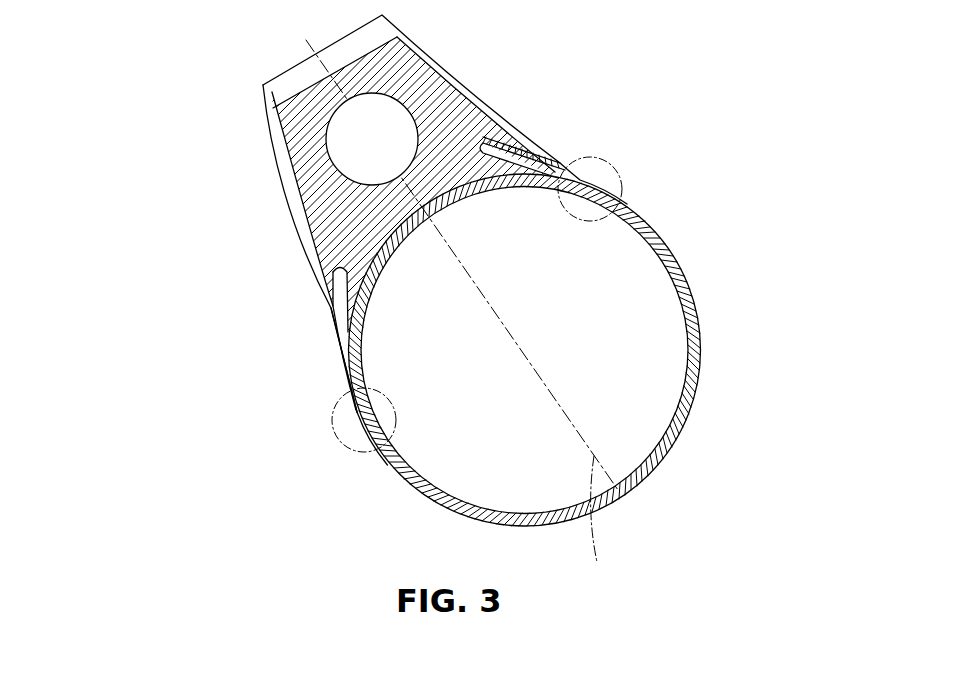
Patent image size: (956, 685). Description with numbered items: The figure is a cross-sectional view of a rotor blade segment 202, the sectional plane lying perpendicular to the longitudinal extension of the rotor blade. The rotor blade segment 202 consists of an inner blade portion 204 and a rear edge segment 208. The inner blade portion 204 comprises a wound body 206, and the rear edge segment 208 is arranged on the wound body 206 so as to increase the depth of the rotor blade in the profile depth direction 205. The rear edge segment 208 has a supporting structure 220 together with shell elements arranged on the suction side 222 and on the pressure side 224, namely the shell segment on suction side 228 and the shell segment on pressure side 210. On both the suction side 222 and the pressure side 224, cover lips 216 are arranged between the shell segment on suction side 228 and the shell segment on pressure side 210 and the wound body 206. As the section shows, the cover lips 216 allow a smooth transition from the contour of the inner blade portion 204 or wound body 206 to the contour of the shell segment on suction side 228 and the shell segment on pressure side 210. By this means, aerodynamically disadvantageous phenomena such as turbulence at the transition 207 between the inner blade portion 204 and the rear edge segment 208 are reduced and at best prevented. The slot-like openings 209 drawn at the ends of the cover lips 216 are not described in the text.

The rotor blade segment 202 is at (192, 66).
The inner blade portion 204 is at (666, 489).
The profile depth direction 205 is at (591, 525).
The wound body 206 is at (696, 383).
The transition 207 is at (622, 192).
The rear edge segment 208 is at (276, 193).
The slot 209 is at (570, 170).
The shell segment on pressure side 210 is at (438, 68).
The cover lips 216 is at (605, 180).
The supporting structure 220 is at (443, 105).
The suction side 222 is at (283, 233).
The pressure side 224 is at (545, 118).
The shell segment on suction side 228 is at (327, 333).